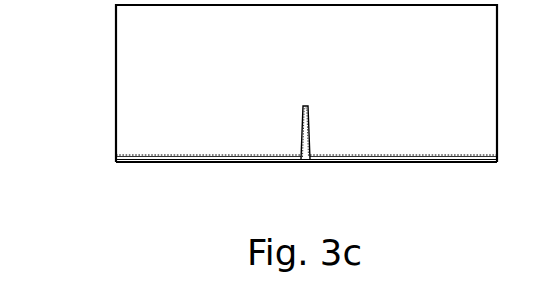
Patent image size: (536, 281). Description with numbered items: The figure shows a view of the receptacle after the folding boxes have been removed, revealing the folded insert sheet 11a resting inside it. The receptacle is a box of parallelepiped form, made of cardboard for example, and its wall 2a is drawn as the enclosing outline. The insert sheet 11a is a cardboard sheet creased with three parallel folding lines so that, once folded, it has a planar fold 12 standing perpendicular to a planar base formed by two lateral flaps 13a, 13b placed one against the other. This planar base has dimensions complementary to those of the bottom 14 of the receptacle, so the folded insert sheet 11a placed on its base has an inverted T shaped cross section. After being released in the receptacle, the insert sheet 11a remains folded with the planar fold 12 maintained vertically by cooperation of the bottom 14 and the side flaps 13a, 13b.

The housing part 2a is at (116, 77).
The insert sheet 11a is at (359, 147).
The planar fold 12 is at (302, 137).
The lateral flap 13a is at (175, 155).
The lateral flap 13b is at (425, 155).
The bottom 14 is at (226, 162).